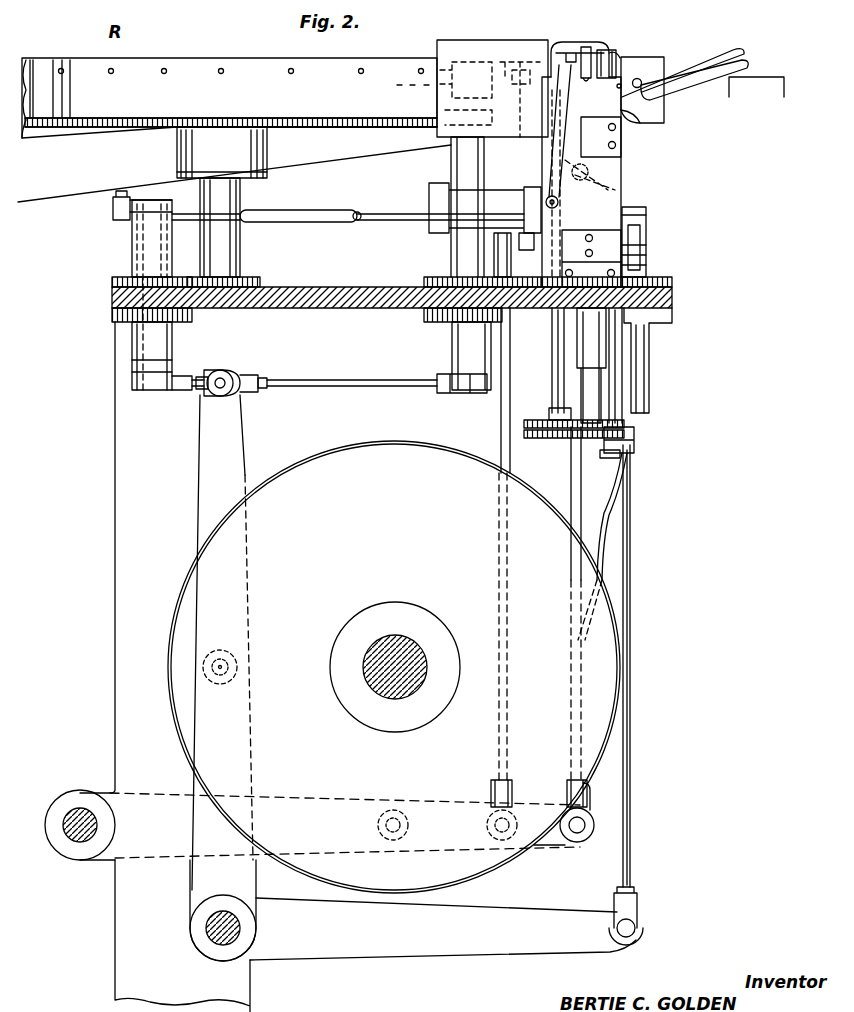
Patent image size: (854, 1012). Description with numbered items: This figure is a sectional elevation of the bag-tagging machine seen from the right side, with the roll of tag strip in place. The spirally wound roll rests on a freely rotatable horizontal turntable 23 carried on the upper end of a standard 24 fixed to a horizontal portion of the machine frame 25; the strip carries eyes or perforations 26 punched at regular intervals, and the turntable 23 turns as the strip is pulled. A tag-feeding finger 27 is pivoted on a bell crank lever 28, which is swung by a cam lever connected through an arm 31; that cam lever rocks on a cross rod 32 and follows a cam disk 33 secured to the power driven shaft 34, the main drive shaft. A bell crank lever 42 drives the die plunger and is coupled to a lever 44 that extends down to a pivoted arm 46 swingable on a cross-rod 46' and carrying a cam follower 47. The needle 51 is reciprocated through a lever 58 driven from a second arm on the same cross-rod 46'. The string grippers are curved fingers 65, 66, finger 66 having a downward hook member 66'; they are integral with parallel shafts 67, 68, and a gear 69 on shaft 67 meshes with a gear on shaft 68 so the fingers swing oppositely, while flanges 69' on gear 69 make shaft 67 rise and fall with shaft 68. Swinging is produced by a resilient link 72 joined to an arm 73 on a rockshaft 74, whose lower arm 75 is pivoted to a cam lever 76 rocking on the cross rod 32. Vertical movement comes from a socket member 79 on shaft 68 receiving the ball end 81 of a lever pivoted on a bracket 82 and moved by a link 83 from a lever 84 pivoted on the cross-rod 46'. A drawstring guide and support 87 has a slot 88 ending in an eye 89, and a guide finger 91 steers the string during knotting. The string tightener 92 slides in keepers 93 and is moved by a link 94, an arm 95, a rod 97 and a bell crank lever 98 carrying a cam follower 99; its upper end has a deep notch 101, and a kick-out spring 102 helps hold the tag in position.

The turntable 23 is at (331, 123).
The standard 24 is at (239, 252).
The machine frame 25 is at (276, 300).
The eyes or perforations 26 is at (113, 73).
The finger 27 is at (459, 65).
The bell crank lever 28 is at (437, 74).
The arm 31 is at (333, 380).
The cross rod 32 is at (210, 930).
The cam disk 33 is at (297, 473).
The power driven shaft 34 is at (395, 642).
The bell crank lever 42 is at (521, 159).
The lever 44 is at (502, 413).
The pivoted arm 46 is at (345, 814).
The cross-rod 46' is at (80, 845).
The cam follower 47 is at (377, 825).
The needle 51 is at (552, 62).
The lever 58 is at (582, 497).
The curved finger 65 is at (567, 42).
The curved finger 66 is at (614, 43).
The hook member 66' is at (640, 41).
The shaft 67 is at (553, 355).
The shaft 68 is at (612, 347).
The gear 69 is at (574, 443).
The flanges 69' is at (543, 400).
The resilient link 72 is at (324, 211).
The arm 73 is at (120, 195).
The rockshaft 74 is at (132, 247).
The arm 75 is at (187, 370).
The cam lever 76 is at (208, 480).
The socket member 79 is at (634, 443).
The ball end 81 is at (624, 452).
The bracket 82 is at (649, 370).
The link 83 is at (606, 535).
The arm or lever 84 is at (562, 842).
The drawstring guide and support 87 is at (698, 80).
The slot 88 is at (727, 51).
The eye 89 is at (641, 86).
The guide finger 91 is at (591, 44).
The string tightener 92 is at (590, 217).
The keepers 93 is at (601, 157).
The link 94 is at (625, 265).
The arm 95 is at (642, 248).
The rod 97 is at (631, 605).
The bell crank lever 98 is at (512, 937).
The cam follower 99 is at (235, 665).
The notch 101 is at (641, 120).
The kick-out spring 102 is at (601, 173).